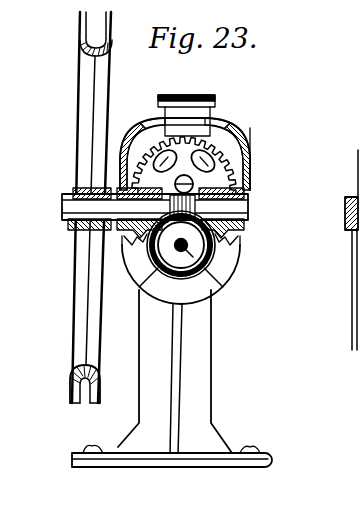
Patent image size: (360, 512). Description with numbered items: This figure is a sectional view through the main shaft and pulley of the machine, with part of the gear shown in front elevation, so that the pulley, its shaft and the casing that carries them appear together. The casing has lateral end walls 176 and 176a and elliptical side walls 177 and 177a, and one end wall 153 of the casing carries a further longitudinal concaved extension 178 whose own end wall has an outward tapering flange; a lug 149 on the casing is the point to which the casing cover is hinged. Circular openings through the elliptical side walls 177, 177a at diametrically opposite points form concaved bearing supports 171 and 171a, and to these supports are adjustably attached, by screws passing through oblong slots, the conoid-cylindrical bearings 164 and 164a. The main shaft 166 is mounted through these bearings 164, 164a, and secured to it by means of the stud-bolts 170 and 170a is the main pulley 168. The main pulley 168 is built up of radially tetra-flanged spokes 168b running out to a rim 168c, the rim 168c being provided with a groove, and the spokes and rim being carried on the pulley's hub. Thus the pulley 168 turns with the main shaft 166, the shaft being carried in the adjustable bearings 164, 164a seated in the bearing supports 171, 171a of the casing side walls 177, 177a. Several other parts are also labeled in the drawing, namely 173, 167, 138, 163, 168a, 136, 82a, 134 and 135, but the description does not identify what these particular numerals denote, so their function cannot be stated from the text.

The main pulley 168 is at (80, 50).
The radially tetra-flanged spokes 168b is at (70, 378).
The rim 168c is at (70, 215).
The fork arms 173 is at (68, 379).
The stud-bolt 170 is at (80, 190).
The stud-bolt 170a is at (82, 196).
The concaved bearing support 171 is at (75, 243).
The concaved bearing support 171a is at (236, 233).
The conoid-cylindrical bearing 164 is at (144, 112).
The conoid-cylindrical bearing 164a is at (250, 128).
The lateral end wall 176 is at (143, 122).
The lateral end wall 176a is at (228, 120).
The elliptical side wall 177 is at (149, 115).
The elliptical side wall 177a is at (222, 104).
The lug 149 is at (192, 96).
The main shaft 166 is at (247, 180).
The gear 167 is at (250, 163).
The pinion 138 is at (200, 203).
The shaft end bushing 163 is at (249, 204).
The bracket 168a is at (228, 243).
The hub 136 is at (214, 250).
The end wall 153 is at (228, 284).
The spoke 82a is at (221, 286).
The standard post 134 is at (182, 330).
The longitudinal concaved extension 178 is at (155, 297).
The base 135 is at (222, 455).